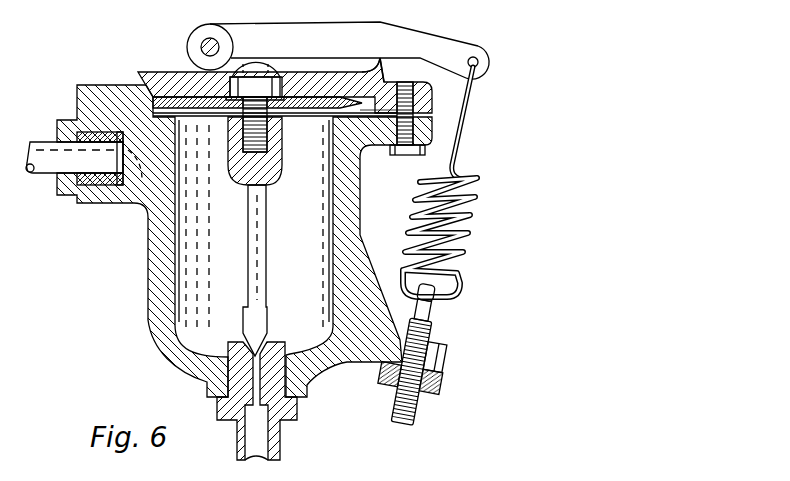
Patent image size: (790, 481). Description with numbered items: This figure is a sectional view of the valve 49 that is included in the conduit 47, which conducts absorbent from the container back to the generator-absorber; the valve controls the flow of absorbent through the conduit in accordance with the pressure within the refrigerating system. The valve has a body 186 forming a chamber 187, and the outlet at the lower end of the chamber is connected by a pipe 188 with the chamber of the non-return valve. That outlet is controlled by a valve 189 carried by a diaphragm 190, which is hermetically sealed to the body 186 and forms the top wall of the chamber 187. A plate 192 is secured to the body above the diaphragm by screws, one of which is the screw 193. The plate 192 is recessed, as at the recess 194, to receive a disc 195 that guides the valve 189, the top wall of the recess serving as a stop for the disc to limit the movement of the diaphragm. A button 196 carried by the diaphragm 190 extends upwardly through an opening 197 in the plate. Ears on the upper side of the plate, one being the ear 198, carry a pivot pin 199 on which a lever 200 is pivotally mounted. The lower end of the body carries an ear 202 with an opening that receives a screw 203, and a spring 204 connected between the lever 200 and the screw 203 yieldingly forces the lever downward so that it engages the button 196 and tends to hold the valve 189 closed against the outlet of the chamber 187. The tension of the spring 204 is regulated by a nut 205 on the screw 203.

The conduit 47 is at (44, 142).
The valve 49 is at (526, 147).
The body 186 is at (152, 276).
The chamber 187 is at (197, 320).
The pipe 188 is at (282, 443).
The valve 189 is at (250, 230).
The diaphragm 190 is at (366, 117).
The plate 192 is at (366, 76).
The screw 193 is at (409, 135).
The recess 194 is at (153, 100).
The disc 195 is at (314, 97).
The button 196 is at (263, 63).
The opening 197 is at (281, 72).
The ear 198 is at (178, 57).
The pivot pin 199 is at (209, 40).
The lever 200 is at (458, 47).
The ear 202 is at (444, 357).
The screw 203 is at (433, 327).
The spring 204 is at (472, 216).
The nut 205 is at (440, 383).